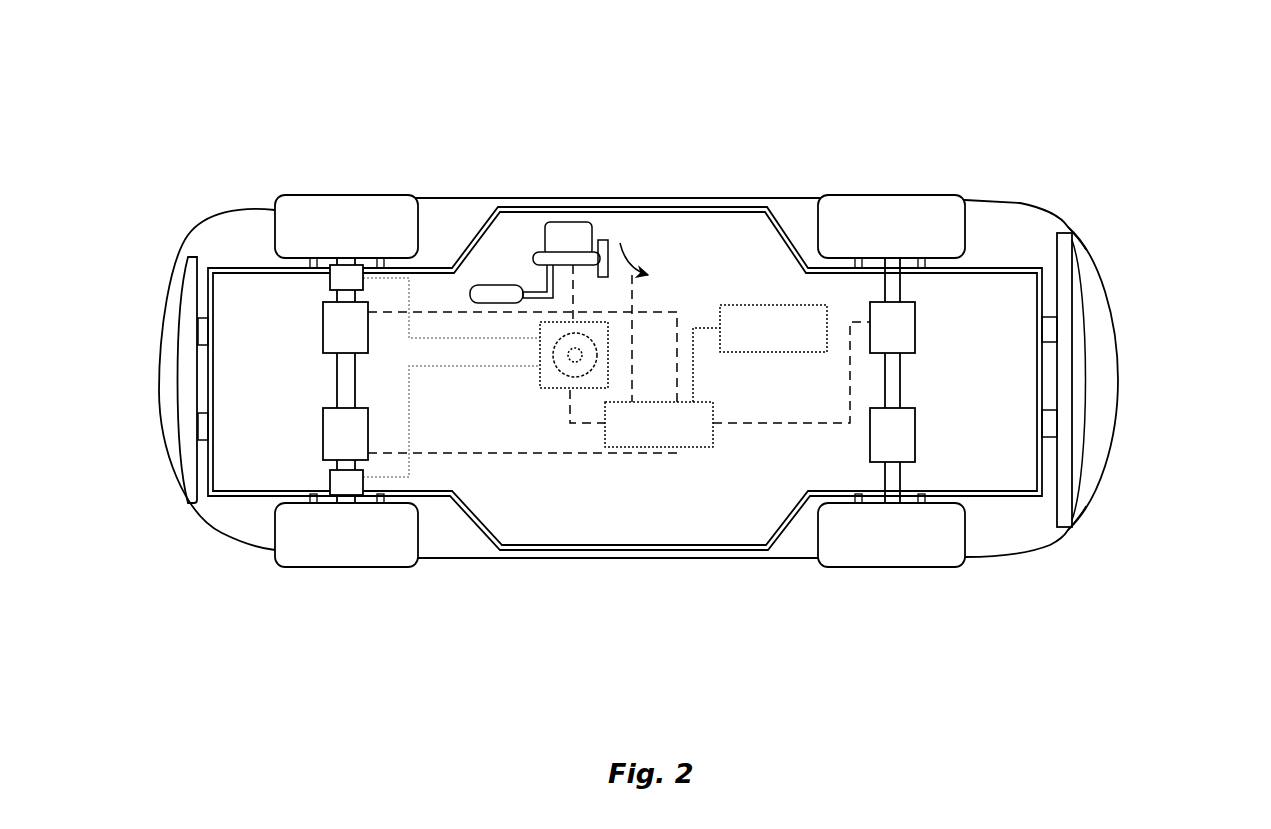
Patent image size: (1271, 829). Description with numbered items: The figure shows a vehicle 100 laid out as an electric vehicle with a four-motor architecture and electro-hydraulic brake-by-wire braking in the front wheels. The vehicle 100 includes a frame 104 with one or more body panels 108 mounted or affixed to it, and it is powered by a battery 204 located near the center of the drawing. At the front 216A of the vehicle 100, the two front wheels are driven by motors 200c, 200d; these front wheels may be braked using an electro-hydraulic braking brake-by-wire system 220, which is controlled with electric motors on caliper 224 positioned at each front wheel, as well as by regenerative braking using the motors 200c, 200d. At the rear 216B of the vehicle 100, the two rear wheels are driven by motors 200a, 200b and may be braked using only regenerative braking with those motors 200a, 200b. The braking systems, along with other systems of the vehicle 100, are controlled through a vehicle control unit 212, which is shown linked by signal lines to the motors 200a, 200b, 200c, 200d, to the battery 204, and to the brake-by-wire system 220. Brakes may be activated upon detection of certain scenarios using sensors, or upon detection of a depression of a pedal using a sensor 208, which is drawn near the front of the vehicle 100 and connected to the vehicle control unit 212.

The vehicle 100 is at (1063, 110).
The frame 104 is at (990, 493).
The body panels 108 is at (222, 533).
The motor 200a is at (920, 431).
The motor 200b is at (920, 322).
The motor 200c is at (319, 324).
The motor 200d is at (319, 433).
The battery 204 is at (774, 302).
The sensor 208 is at (569, 222).
The vehicle control unit 212 is at (664, 449).
The front 216A is at (178, 385).
The rear 216B is at (1073, 372).
The electro-hydraulic braking brake-by-wire system 220 is at (565, 392).
The electric motors on caliper 224 is at (326, 279).